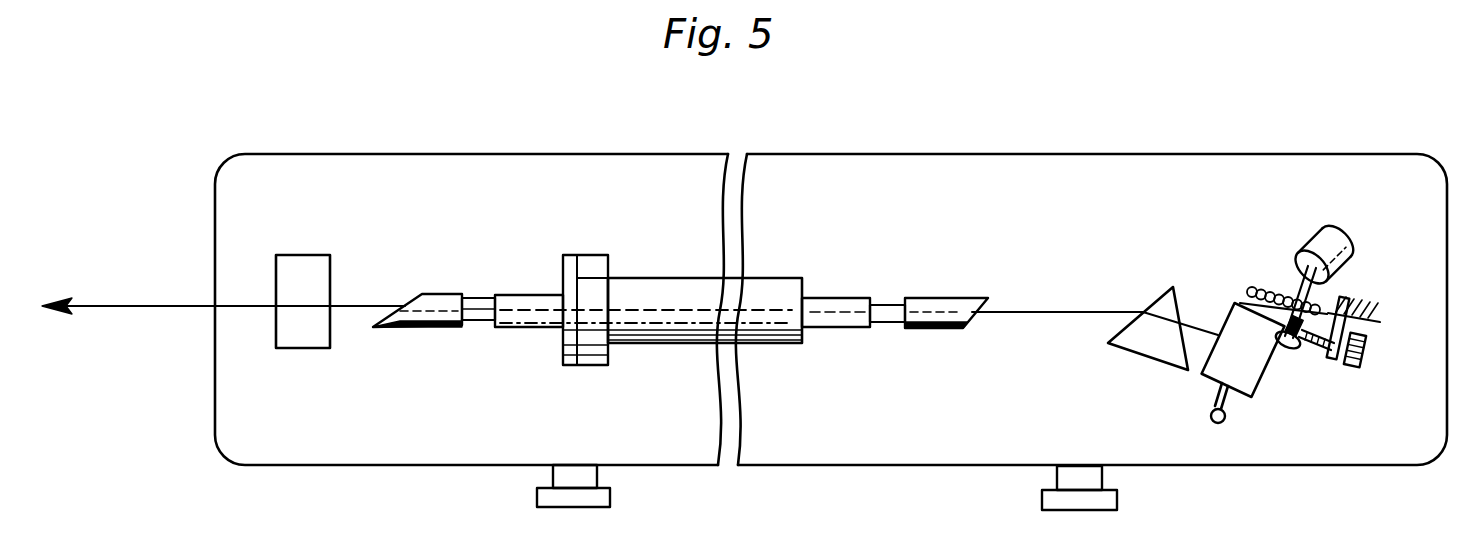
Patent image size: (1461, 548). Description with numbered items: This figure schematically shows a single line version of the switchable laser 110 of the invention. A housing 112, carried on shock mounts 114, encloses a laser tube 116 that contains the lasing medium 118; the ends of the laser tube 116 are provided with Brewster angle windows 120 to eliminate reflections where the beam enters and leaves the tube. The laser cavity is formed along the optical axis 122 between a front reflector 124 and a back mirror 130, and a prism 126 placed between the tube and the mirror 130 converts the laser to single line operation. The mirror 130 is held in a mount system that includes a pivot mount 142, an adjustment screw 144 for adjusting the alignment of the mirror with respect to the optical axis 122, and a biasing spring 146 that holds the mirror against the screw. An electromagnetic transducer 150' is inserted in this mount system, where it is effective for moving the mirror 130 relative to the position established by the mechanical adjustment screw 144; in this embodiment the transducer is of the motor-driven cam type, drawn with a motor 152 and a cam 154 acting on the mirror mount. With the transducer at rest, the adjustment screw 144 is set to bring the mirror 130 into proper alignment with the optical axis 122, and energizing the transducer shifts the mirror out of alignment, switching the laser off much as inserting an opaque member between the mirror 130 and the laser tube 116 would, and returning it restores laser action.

The switchable laser 110 is at (530, 135).
The housing 112 is at (803, 154).
The shock mounts 114 is at (612, 497).
The laser tube 116 is at (769, 278).
The lasing medium 118 is at (770, 303).
The Brewster angle windows 120 is at (416, 291).
The optical axis 122 is at (1054, 310).
The front reflector 124 is at (331, 326).
The prism 126 is at (1130, 350).
The mirror 130 is at (1200, 383).
The pivot mount 142 is at (1226, 419).
The adjustment screw 144 is at (1358, 356).
The biasing spring 146 is at (1263, 287).
The electromagnetic transducer 150' is at (1319, 244).
The motor 152 is at (1347, 262).
The coupling ring 154 is at (1297, 349).